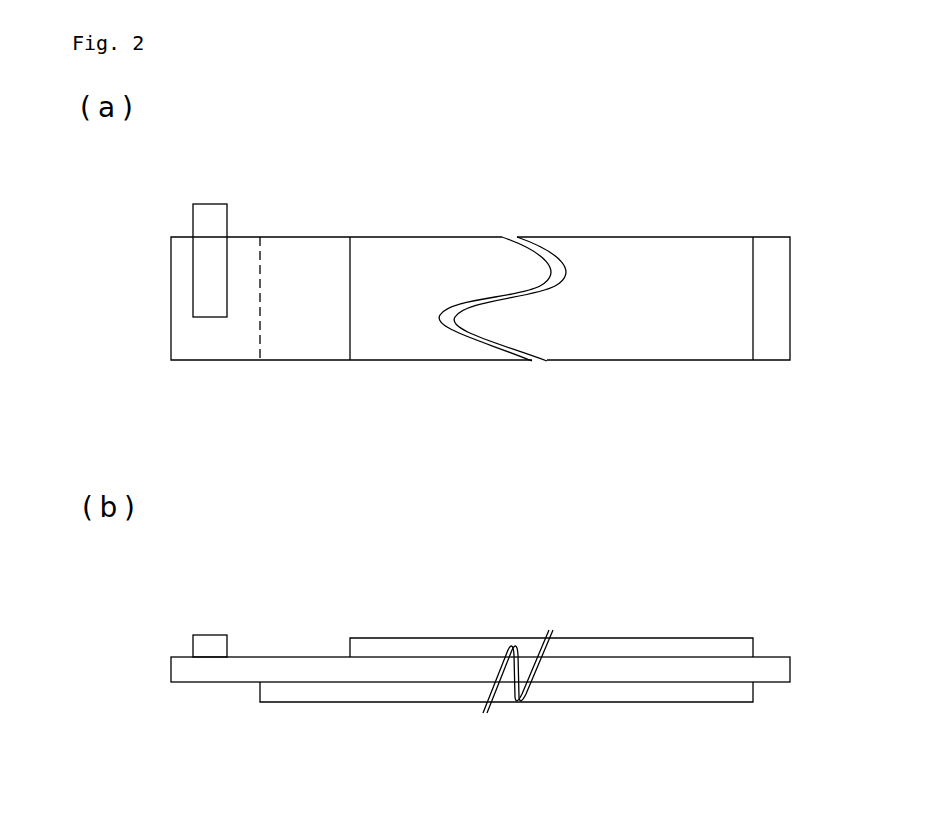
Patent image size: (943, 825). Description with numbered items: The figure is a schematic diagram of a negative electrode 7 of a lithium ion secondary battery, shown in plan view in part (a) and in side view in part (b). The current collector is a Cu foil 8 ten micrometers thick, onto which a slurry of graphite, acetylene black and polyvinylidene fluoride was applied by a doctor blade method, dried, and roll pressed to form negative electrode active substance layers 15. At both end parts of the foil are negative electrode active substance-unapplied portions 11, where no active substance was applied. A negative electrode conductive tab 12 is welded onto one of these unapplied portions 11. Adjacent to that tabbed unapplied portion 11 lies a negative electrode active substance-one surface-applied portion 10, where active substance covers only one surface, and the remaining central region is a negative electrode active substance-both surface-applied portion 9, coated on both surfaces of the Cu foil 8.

The negative electrode 7 is at (167, 277).
The Cu foil 8 is at (727, 672).
The negative electrode active substance-both surface-applied portion 9 is at (380, 255).
The negative electrode active substance-one surface-applied portion 10 is at (307, 343).
The negative electrode active substance-unapplied portion 11 is at (196, 327).
The negative electrode conductive tab 12 is at (215, 222).
The negative electrode active substance layer 15 is at (600, 638).